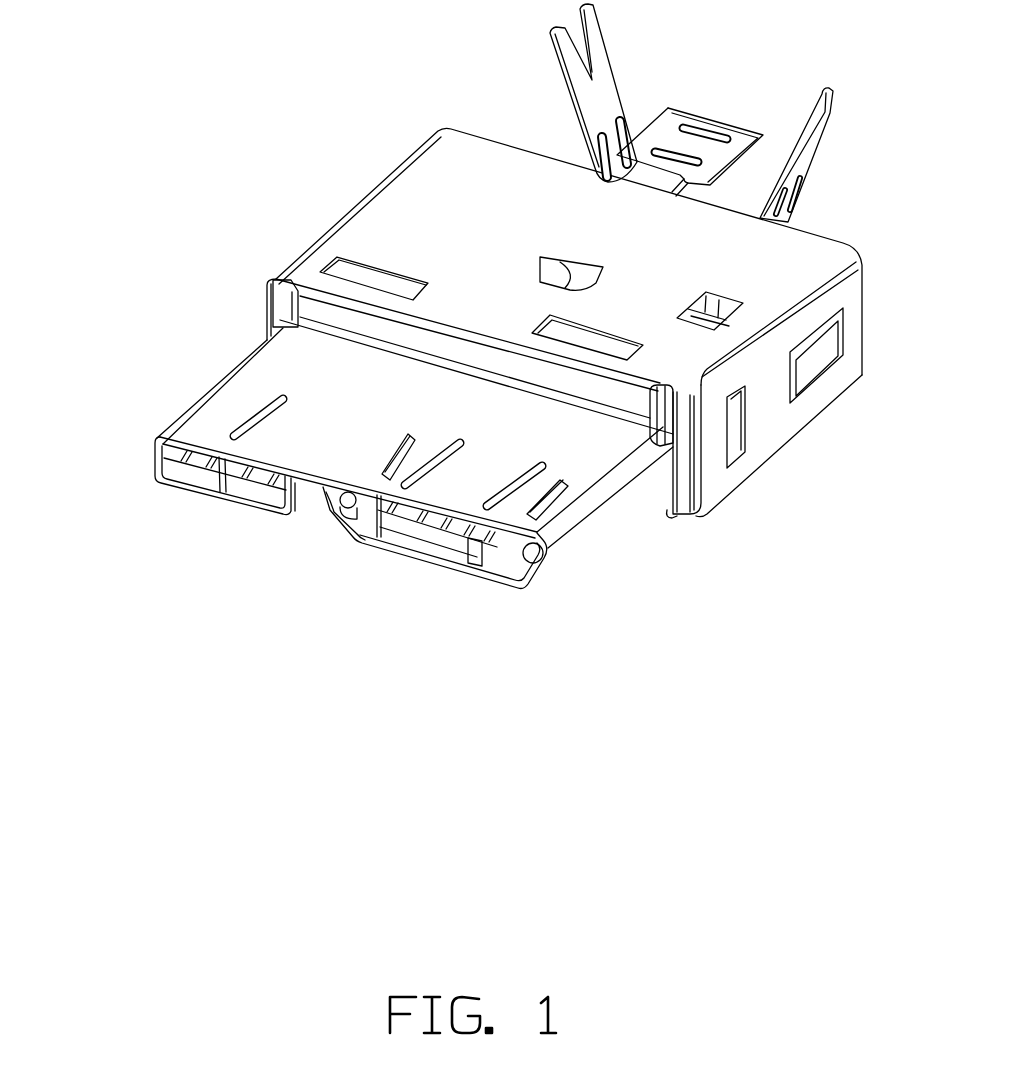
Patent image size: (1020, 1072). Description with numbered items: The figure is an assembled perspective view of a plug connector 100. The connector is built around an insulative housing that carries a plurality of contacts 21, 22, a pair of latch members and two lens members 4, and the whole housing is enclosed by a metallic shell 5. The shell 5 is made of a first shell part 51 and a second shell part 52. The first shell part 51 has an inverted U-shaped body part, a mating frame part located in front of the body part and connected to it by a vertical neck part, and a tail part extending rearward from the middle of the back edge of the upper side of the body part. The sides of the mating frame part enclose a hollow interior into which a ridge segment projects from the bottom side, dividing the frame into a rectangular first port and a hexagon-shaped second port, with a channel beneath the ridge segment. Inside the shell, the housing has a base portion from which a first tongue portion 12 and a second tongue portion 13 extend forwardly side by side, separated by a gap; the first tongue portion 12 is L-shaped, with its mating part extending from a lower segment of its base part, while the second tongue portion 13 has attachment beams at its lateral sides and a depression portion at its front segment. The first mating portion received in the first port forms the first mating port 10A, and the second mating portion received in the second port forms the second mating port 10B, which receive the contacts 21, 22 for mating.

The plug connector 100 is at (298, 187).
The metallic shell 5 is at (855, 520).
The first shell part 51 is at (618, 493).
The second shell part 52 is at (780, 425).
The first mating port 10A is at (190, 481).
The second mating port 10B is at (438, 547).
The first tongue portion 12 is at (250, 497).
The second tongue portion 13 is at (377, 530).
The contacts 21 is at (253, 468).
The contacts 22 is at (495, 537).
The lens members 4 is at (537, 552).